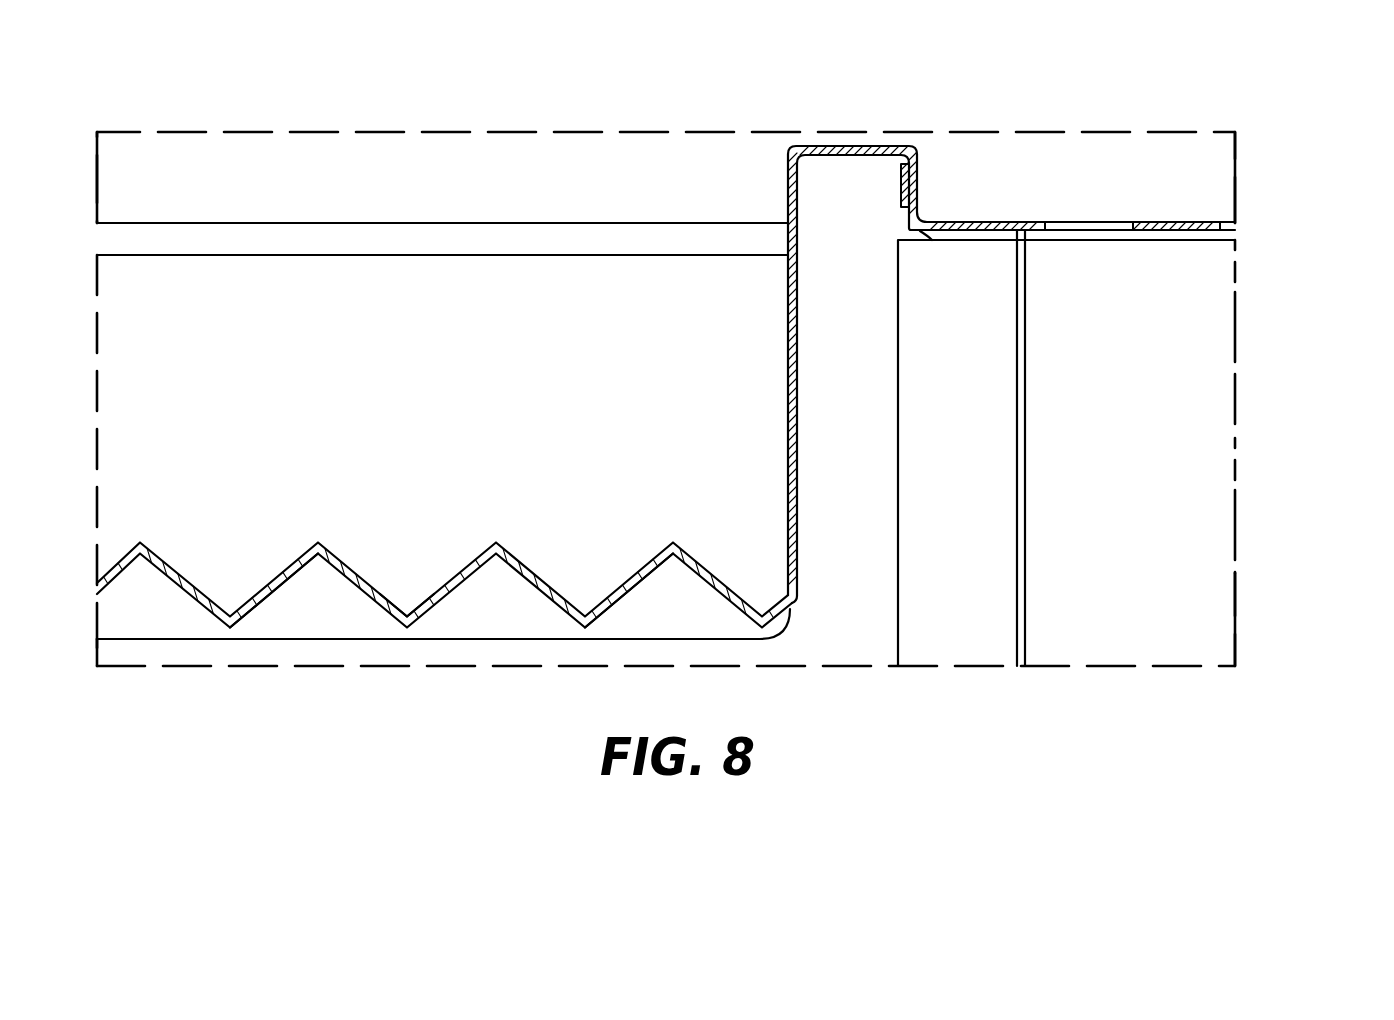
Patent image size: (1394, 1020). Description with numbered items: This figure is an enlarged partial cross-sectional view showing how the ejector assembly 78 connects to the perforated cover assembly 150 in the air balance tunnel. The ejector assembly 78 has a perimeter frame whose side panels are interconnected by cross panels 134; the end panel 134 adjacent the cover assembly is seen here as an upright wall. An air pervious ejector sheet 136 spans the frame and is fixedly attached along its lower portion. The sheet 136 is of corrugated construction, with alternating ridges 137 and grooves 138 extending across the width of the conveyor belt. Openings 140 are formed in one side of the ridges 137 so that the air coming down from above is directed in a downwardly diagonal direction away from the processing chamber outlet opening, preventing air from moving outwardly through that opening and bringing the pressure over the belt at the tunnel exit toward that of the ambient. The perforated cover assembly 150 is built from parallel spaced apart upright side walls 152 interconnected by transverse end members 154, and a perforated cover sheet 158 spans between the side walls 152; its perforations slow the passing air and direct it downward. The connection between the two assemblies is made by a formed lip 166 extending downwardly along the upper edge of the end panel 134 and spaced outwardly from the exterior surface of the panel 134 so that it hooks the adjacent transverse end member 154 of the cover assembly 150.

The ejector assembly 78 is at (336, 332).
The cross panel 134 is at (788, 302).
The ejector sheet 136 is at (367, 550).
The ridge 137 is at (317, 542).
The groove 138 is at (410, 613).
The opening 140 is at (280, 585).
The perforated cover assembly 150 is at (1234, 325).
The side wall 152 is at (1115, 555).
The transverse end member 154 is at (903, 187).
The perforated cover sheet 158 is at (1155, 222).
The lip 166 is at (917, 182).